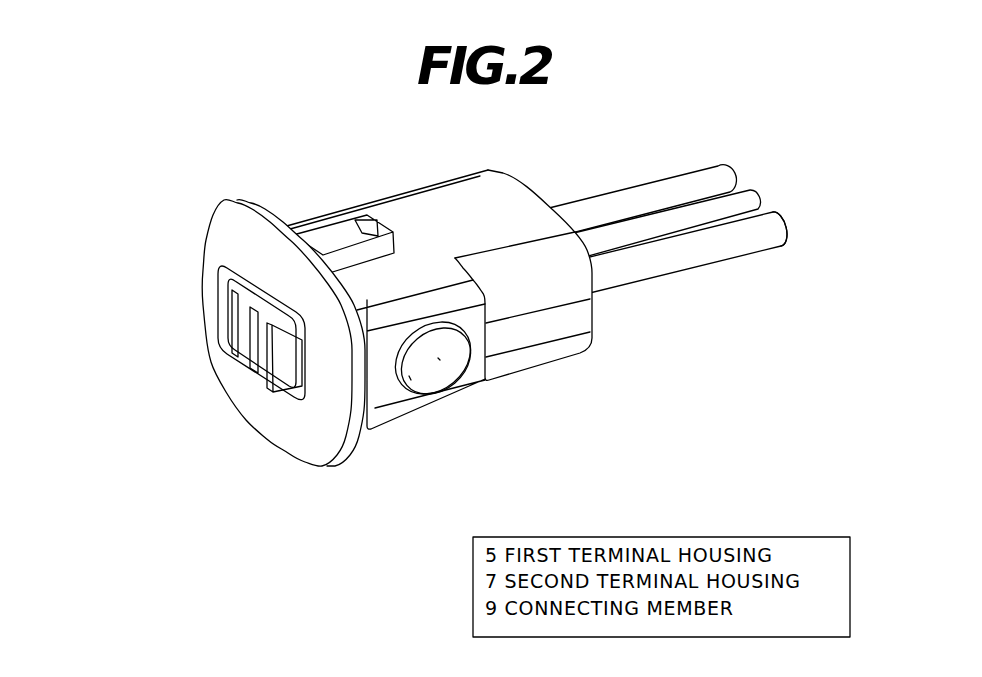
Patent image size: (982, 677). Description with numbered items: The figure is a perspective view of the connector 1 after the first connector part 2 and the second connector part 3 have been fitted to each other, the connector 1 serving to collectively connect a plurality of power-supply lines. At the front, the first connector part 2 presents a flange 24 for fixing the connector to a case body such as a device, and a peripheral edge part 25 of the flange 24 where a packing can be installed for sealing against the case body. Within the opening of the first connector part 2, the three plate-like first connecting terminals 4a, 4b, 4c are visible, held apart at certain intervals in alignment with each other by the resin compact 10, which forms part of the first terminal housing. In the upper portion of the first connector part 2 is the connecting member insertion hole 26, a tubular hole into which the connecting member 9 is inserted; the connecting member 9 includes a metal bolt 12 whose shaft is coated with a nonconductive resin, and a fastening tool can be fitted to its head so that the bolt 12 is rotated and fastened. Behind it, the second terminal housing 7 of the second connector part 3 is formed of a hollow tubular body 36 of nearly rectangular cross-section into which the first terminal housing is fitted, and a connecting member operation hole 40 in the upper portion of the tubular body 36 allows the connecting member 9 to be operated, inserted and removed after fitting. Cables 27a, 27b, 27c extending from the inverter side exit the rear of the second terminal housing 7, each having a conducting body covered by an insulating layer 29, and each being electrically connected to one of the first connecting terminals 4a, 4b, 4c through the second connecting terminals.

The connector 1 is at (294, 124).
The first connector part 2 is at (233, 188).
The second connector part 3 is at (438, 211).
The first connecting terminal 4a is at (284, 362).
The first connecting terminal 4b is at (252, 333).
The first connecting terminal 4c is at (233, 312).
The second terminal housing 7 is at (514, 190).
The connecting member 9 is at (448, 362).
The resin compact 10 is at (280, 407).
The bolt 12 is at (409, 376).
The flange 24 is at (265, 213).
The peripheral edge part 25 is at (230, 230).
The connecting member insertion hole 26 is at (436, 418).
The cable 27a is at (689, 277).
The cable 27b is at (758, 183).
The cable 27c is at (637, 178).
The insulating layer 29 is at (753, 243).
The tubular body 36 is at (552, 328).
The connecting member operation hole 40 is at (455, 385).